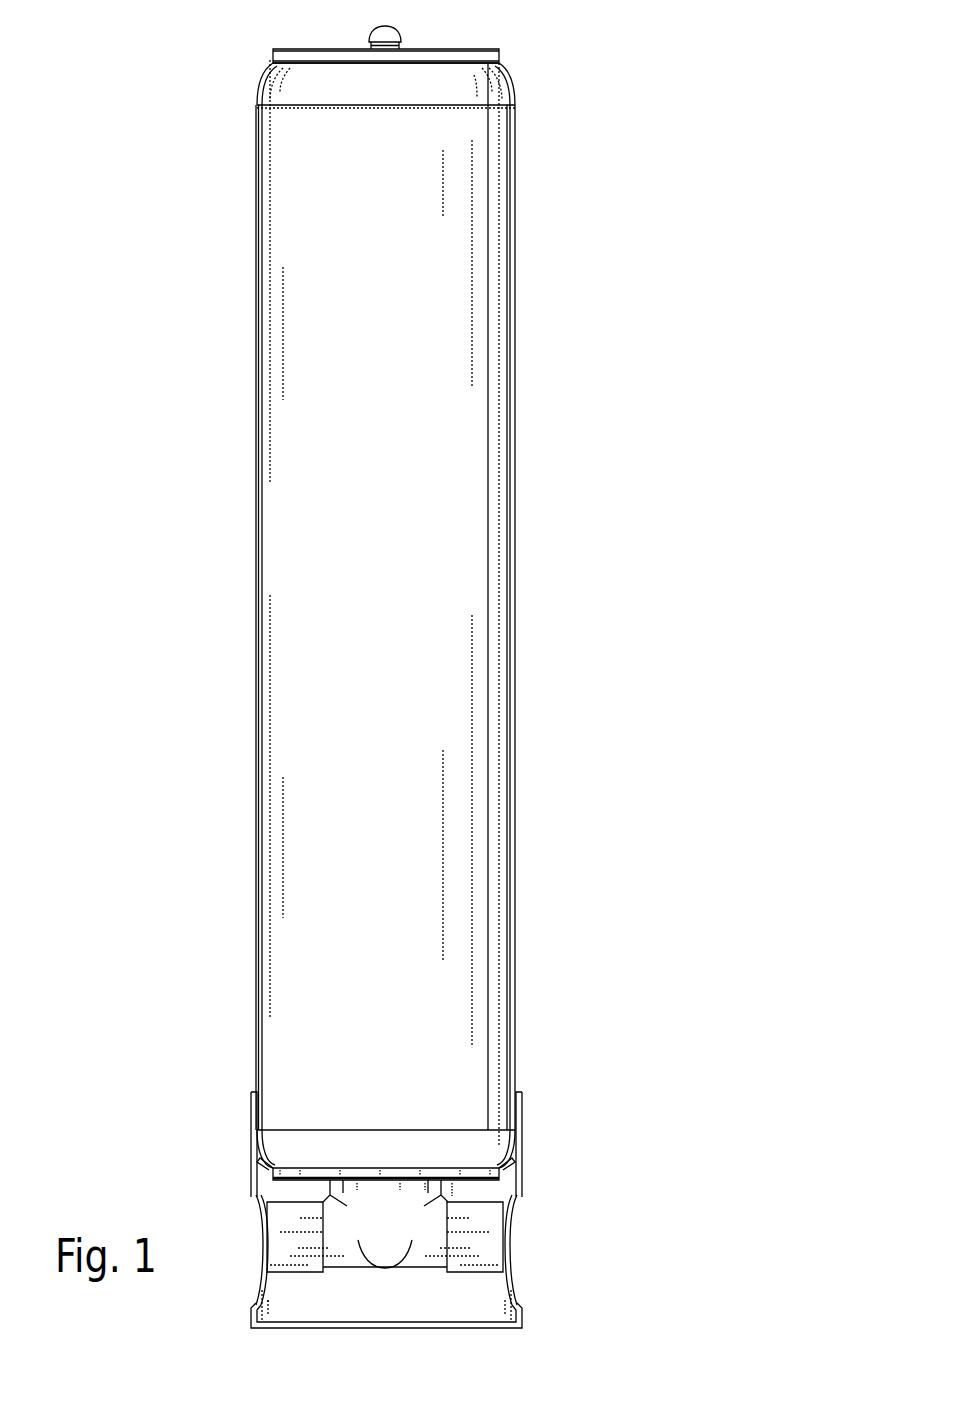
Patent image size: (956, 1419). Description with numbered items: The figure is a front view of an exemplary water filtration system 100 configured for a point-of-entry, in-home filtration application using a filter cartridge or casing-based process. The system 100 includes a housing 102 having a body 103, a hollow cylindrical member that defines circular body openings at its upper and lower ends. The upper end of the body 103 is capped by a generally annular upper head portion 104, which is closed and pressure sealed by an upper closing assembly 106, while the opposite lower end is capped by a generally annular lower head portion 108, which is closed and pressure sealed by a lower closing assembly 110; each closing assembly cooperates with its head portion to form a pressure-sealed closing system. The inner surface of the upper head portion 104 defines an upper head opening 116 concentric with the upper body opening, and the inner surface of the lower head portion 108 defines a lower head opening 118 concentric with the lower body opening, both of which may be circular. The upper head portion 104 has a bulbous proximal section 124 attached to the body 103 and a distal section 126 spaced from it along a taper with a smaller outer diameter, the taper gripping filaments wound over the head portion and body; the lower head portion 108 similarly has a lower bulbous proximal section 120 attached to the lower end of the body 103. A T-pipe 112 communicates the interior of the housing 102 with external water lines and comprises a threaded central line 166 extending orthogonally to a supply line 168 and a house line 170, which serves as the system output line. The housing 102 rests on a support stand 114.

The water filtration system 100 is at (243, 37).
The housing 102 is at (582, 281).
The body 103 is at (477, 445).
The upper head portion 104 is at (497, 92).
The upper closing assembly 106 is at (460, 43).
The lower head portion 108 is at (295, 1145).
The lower closing assembly 110 is at (518, 1223).
The T-pipe 112 is at (378, 1278).
The support stand 114 is at (497, 1318).
The upper head opening 116 is at (486, 42).
The lower head opening 118 is at (496, 1188).
The lower bulbous proximal section 120 is at (508, 1152).
The bulbous proximal section 124 is at (258, 90).
The distal section 126 is at (272, 57).
The central line 166 is at (340, 1184).
The supply line 168 is at (290, 1236).
The house line 170 is at (497, 1263).